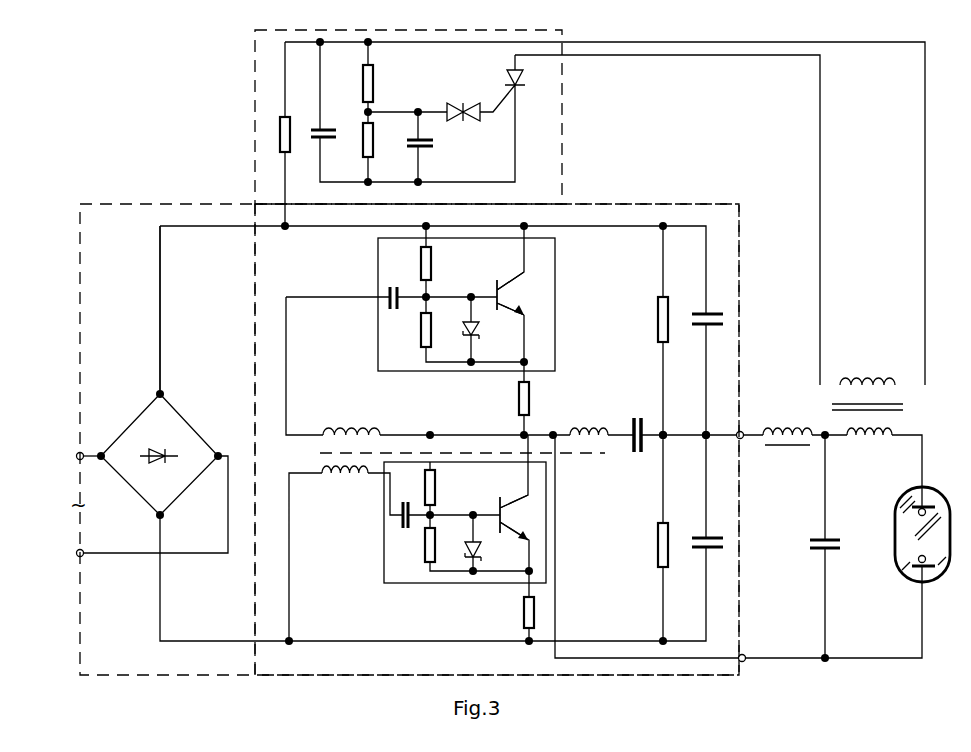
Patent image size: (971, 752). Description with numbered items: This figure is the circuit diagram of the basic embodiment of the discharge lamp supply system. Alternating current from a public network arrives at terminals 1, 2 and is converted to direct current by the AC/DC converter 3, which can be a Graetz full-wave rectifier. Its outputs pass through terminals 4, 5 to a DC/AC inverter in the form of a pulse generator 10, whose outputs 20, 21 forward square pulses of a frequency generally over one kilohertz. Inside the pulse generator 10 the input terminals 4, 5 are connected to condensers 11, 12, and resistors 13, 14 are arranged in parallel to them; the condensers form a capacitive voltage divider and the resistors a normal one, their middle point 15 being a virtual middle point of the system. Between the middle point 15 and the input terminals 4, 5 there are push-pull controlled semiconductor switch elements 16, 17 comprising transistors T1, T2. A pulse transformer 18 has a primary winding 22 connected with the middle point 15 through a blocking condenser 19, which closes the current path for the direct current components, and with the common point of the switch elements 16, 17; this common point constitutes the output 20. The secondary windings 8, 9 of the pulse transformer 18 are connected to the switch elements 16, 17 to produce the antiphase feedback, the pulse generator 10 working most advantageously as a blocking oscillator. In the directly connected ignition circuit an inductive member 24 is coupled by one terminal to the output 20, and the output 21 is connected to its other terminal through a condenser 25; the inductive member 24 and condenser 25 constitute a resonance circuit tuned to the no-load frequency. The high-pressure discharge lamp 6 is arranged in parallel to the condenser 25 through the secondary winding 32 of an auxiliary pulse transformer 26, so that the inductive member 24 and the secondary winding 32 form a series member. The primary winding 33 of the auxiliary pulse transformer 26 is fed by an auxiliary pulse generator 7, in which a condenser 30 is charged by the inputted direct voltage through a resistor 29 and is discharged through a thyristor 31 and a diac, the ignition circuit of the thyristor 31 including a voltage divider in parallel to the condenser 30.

The terminal 1 is at (81, 458).
The terminal 2 is at (145, 511).
The AC/DC converter 3 is at (150, 503).
The terminal 4 is at (160, 283).
The terminal 5 is at (160, 612).
The high-pressure discharge lamp 6 is at (906, 530).
The auxiliary pulse generator 7 is at (446, 80).
The secondary winding 8 is at (348, 431).
The secondary winding 9 is at (350, 476).
The pulse generator 10 is at (608, 268).
The condenser 11 is at (697, 319).
The condenser 12 is at (705, 537).
The resistor 13 is at (663, 330).
The resistor 14 is at (663, 555).
The middle point 15 is at (665, 440).
The semiconductor switch element 16 is at (480, 269).
The semiconductor switch element 17 is at (416, 571).
The pulse transformer 18 is at (565, 456).
The blocking condenser 19 is at (637, 418).
The output 20 is at (745, 655).
The output 21 is at (741, 431).
The primary winding 22 is at (568, 433).
The inductive member 24 is at (777, 432).
The condenser 25 is at (822, 538).
The auxiliary pulse transformer 26 is at (892, 408).
The resistor 29 is at (283, 128).
The condenser 30 is at (338, 136).
The thyristor 31 is at (494, 116).
The secondary winding 32 is at (876, 438).
The primary winding 33 is at (857, 384).
The transistor T1 is at (525, 517).
The transistor T2 is at (523, 293).